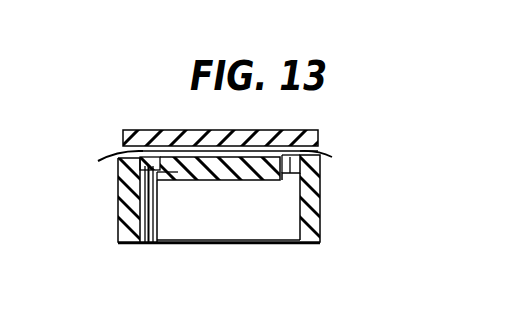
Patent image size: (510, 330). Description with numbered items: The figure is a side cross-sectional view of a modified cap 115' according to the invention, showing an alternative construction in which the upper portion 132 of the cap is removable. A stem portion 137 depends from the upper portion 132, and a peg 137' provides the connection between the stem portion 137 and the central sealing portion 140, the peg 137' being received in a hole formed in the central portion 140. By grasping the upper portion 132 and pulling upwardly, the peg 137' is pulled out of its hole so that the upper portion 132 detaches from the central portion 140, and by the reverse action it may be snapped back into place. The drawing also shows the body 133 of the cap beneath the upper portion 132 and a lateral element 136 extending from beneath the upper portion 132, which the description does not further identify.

The cap 115' is at (372, 101).
The upper portion 132 is at (145, 135).
The housing body 133 is at (317, 212).
The lead wire 136 is at (106, 173).
The stem portion 137 is at (251, 164).
The peg 137' is at (169, 197).
The central sealing portion 140 is at (255, 180).